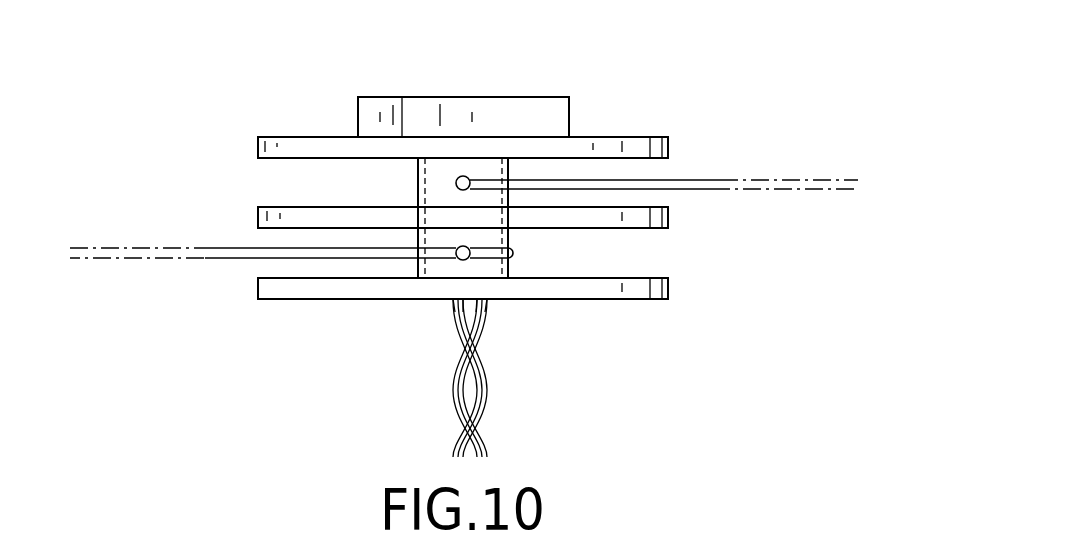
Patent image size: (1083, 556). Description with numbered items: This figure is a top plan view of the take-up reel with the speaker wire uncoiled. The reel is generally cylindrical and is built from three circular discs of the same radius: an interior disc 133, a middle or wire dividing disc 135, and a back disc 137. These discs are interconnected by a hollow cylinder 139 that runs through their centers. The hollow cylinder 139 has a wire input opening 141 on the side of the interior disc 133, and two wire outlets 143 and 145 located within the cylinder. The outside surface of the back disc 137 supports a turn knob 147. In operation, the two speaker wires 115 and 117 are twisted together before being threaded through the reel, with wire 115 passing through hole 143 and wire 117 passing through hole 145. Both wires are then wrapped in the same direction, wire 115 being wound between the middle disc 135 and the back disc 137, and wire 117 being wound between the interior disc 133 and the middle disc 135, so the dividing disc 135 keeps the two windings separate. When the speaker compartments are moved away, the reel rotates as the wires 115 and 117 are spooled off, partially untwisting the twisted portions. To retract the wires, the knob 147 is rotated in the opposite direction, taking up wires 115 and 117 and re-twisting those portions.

The wire 115 is at (702, 180).
The wire 117 is at (226, 248).
The interior disc 133 is at (668, 290).
The middle/wire dividing disc 135 is at (668, 218).
The back disc 137 is at (633, 137).
The hollow cylinder 139 is at (508, 236).
The wire input opening 141 is at (505, 300).
The wire outlet 143 is at (456, 180).
The wire outlet 145 is at (455, 255).
The turn knob 147 is at (487, 97).